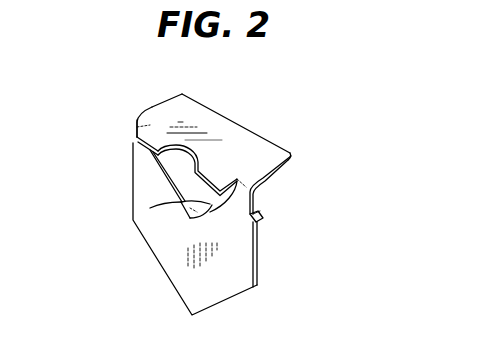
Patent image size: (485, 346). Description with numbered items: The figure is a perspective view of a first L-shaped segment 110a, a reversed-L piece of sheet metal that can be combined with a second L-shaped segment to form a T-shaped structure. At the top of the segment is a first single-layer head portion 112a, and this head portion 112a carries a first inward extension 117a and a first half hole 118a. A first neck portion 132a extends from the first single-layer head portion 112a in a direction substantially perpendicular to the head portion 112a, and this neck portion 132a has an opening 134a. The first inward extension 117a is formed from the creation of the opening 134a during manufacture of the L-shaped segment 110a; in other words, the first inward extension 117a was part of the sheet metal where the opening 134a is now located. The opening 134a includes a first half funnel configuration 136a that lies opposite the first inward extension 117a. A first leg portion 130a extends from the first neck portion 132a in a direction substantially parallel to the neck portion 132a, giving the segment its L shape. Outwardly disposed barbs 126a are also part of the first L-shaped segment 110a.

The first L-shaped segment 110a is at (318, 103).
The first single-layer head portion 112a is at (211, 137).
The first inward extension 117a is at (155, 140).
The first half hole 118a is at (181, 160).
The outwardly disposed barbs 126a is at (129, 146).
The first leg portion 130a is at (215, 287).
The first neck portion 132a is at (233, 204).
The opening 134a is at (163, 171).
The first half funnel configuration 136a is at (172, 199).